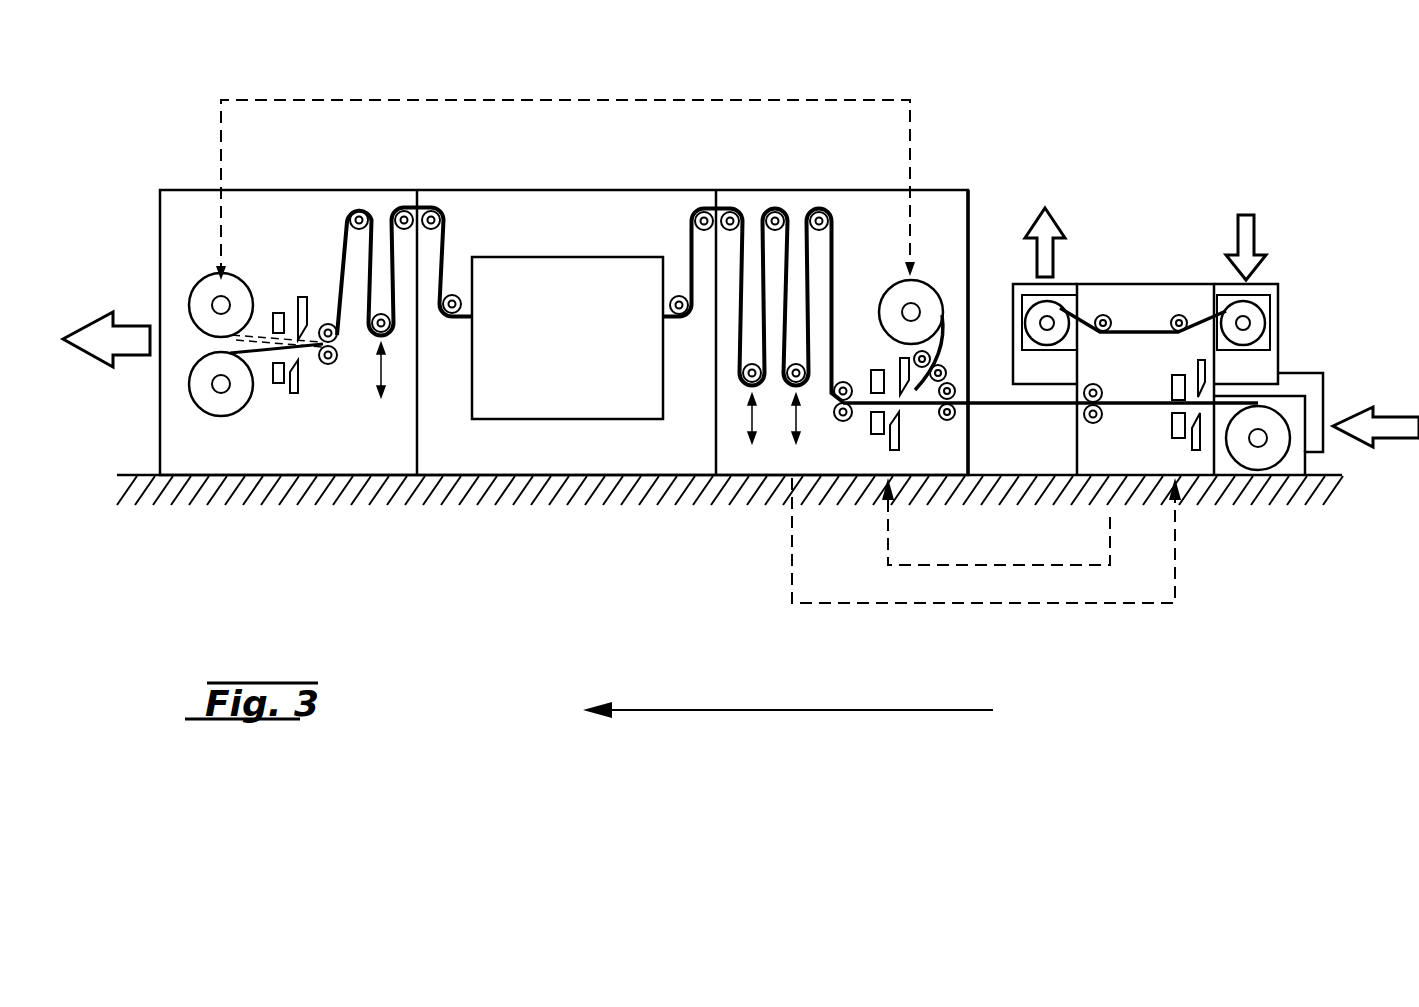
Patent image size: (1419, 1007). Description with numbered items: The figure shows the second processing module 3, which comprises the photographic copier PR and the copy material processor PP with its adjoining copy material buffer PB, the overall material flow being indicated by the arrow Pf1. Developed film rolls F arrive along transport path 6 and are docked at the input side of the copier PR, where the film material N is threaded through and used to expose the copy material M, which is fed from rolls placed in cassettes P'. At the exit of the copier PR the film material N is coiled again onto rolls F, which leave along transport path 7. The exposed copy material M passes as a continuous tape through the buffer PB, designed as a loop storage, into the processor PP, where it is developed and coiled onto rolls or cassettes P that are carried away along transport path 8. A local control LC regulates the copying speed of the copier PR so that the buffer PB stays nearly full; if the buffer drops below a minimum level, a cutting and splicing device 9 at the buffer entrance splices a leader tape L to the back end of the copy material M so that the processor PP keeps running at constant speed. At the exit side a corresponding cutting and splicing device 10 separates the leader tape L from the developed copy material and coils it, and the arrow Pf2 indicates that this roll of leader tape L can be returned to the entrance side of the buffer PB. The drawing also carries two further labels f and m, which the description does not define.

The second processing module 3 is at (1035, 107).
The transport path 6 is at (1250, 225).
The transport path 7 is at (1038, 222).
The transport path 8 is at (134, 330).
The cutting and splicing device 9 is at (858, 437).
The cutting and splicing device 10 is at (301, 280).
The leader tape L is at (233, 288).
The copy material roll P is at (739, 448).
The copy material M is at (470, 225).
The copy material processor PP is at (572, 207).
The copy material buffer PB is at (873, 205).
The photographic copier PR is at (1148, 292).
The film roll F is at (1050, 310).
The film material N is at (1136, 338).
The cassette P' is at (1292, 413).
The arrow indicating material flow Pf1 is at (780, 712).
The arrow indicating leader tape return Pf2 is at (672, 99).
The local control LC is at (932, 615).
The length f is at (1110, 526).
The length m is at (1175, 546).